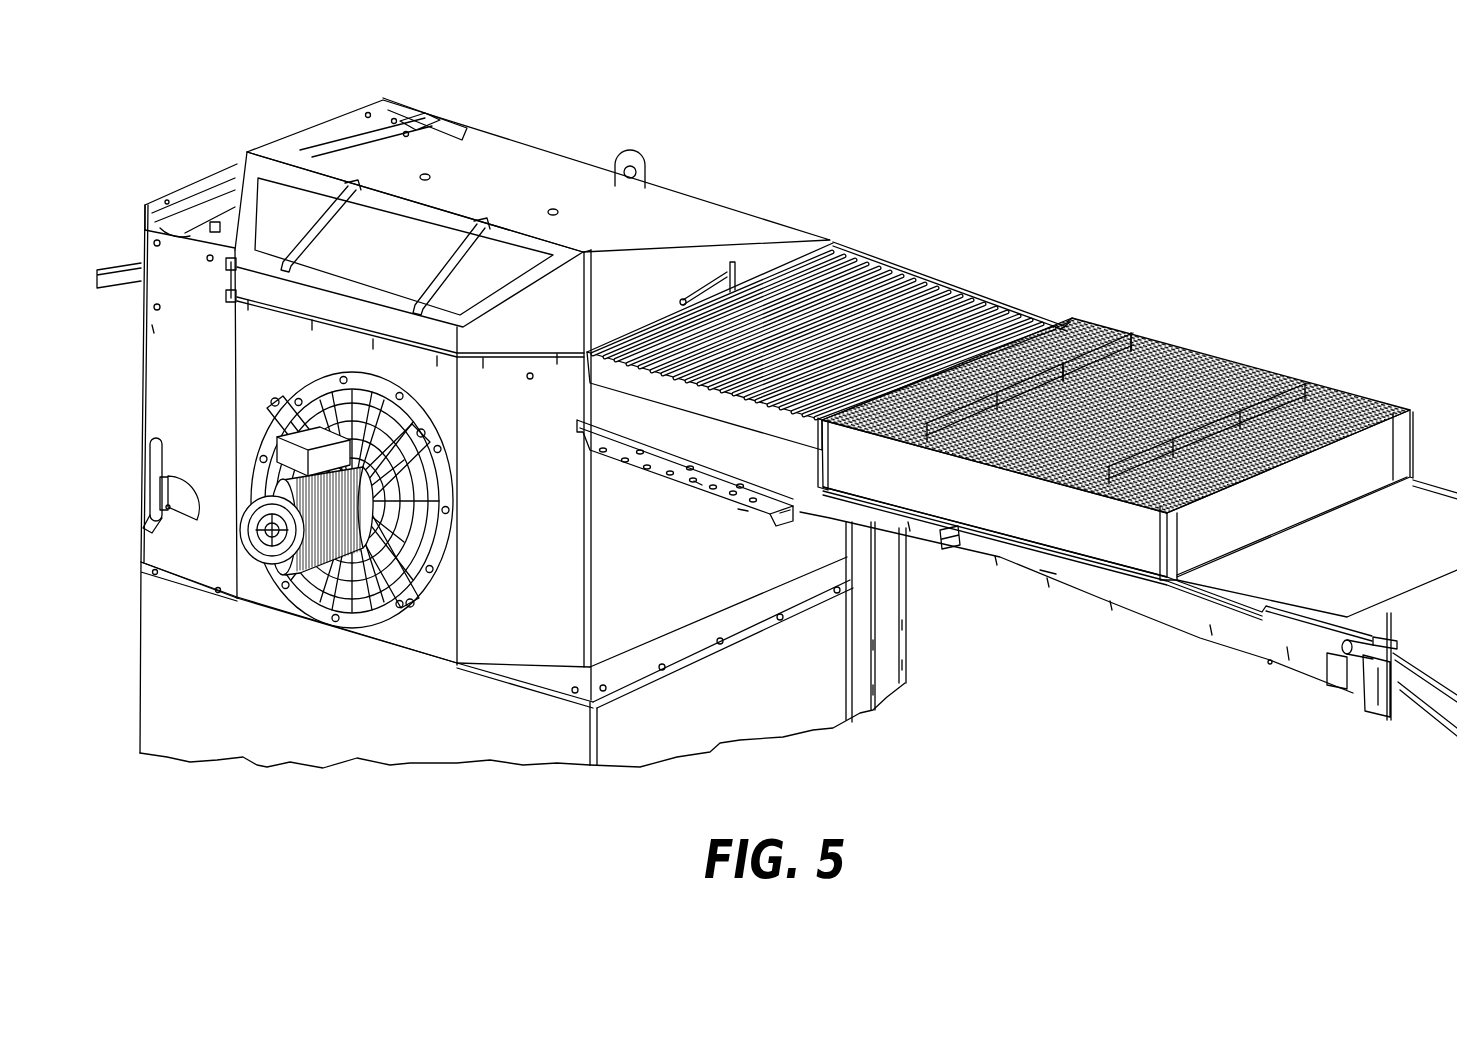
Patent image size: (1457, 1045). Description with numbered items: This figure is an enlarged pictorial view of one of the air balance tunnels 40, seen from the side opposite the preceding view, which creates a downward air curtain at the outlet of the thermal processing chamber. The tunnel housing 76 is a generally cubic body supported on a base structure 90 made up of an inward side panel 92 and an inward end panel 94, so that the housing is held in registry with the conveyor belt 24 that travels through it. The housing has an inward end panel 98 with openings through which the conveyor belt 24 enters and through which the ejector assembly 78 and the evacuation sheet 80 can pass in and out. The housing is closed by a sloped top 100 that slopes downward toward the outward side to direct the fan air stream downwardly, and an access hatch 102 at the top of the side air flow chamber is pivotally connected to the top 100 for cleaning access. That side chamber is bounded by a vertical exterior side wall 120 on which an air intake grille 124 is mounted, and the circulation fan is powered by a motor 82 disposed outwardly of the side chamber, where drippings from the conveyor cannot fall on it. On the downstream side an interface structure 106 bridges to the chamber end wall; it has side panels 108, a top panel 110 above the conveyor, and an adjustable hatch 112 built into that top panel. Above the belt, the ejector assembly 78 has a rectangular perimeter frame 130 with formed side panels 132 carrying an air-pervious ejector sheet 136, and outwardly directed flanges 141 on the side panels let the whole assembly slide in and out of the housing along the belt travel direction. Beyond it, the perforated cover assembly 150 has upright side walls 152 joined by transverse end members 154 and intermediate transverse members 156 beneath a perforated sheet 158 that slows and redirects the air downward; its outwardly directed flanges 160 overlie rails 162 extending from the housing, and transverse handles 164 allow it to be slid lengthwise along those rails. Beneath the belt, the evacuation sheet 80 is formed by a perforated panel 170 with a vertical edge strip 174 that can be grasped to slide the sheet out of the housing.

The conveyor belt 24 is at (1353, 553).
The air balance tunnel 40 is at (667, 121).
The tunnel housing 76 is at (530, 150).
The ejector assembly 78 is at (943, 280).
The evacuation sheet 80 is at (783, 513).
The motor 82 is at (250, 558).
The base structure 90 is at (448, 765).
The side panel 92 is at (317, 727).
The end panel 94 is at (623, 717).
The inward end panel 98 is at (697, 483).
The sloped top 100 is at (687, 213).
The access hatch 102 is at (375, 220).
The interface structure 106 is at (143, 418).
The side panels 108 is at (180, 340).
The top panel 110 is at (187, 218).
The adjustable hatch 112 is at (420, 130).
The side wall 120 is at (417, 637).
The air intake grille 124 is at (350, 573).
The perimeter frame 130 is at (973, 287).
The side panels 132 is at (853, 280).
The ejector sheet 136 is at (990, 328).
The outwardly directed flanges 141 is at (910, 280).
The perforated cover assembly 150 is at (1212, 354).
The side walls 152 is at (1107, 540).
The transverse end members 154 is at (1110, 343).
The intermediate transverse members 156 is at (1150, 340).
The perforated sheet 158 is at (1260, 380).
The outwardly directed flanges 160 is at (1143, 580).
The rails 162 is at (1047, 568).
The transverse handles 164 is at (1113, 333).
The perforated panel 170 is at (743, 510).
The vertical edge strip 174 is at (818, 428).